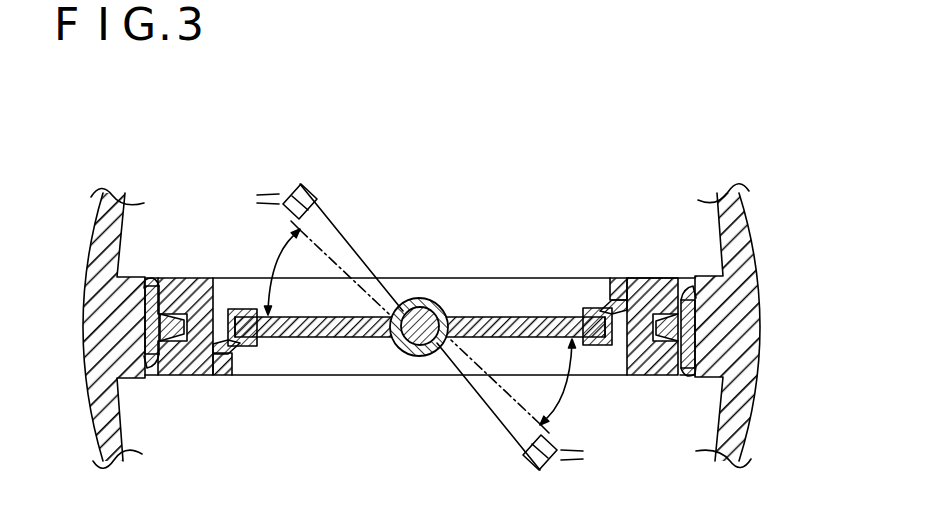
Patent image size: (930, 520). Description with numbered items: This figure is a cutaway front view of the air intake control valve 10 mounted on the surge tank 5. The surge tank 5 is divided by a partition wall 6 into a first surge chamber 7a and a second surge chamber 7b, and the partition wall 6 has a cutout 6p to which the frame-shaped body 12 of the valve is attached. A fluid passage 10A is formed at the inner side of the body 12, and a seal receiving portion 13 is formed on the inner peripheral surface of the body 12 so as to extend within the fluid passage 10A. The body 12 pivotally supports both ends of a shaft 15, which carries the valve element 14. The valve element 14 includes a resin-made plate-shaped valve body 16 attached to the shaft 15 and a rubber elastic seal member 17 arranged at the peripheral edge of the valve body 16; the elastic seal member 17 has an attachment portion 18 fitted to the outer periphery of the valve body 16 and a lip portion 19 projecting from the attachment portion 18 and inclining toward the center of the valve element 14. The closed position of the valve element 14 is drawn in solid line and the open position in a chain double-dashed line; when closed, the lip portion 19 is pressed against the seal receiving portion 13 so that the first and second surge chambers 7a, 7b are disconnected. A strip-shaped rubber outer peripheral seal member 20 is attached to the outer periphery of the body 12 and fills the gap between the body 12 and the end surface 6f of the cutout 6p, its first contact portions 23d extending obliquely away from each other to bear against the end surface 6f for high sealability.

The surge tank 5 is at (745, 216).
The partition wall 6 is at (712, 378).
The end surface 6f is at (690, 290).
The cutout 6p is at (663, 268).
The first surge chamber 7a is at (439, 175).
The second surge chamber 7b is at (448, 502).
The air intake control valve 10 is at (361, 176).
The fluid passage 10A is at (520, 266).
The body 12 is at (195, 376).
The seal receiving portion 13 is at (230, 365).
The valve element 14 is at (471, 316).
The shaft 15 is at (421, 348).
The valve body 16 is at (356, 338).
The elastic seal member 17 is at (238, 309).
The attachment portion 18 is at (256, 348).
The lip portion 19 is at (624, 314).
The outer peripheral seal member 20 is at (699, 313).
The first contact portion 23d is at (148, 297).